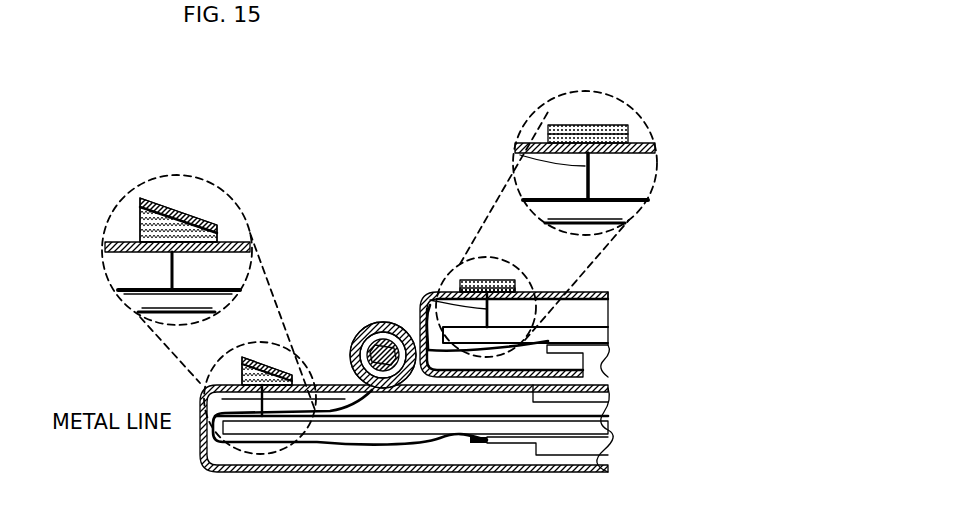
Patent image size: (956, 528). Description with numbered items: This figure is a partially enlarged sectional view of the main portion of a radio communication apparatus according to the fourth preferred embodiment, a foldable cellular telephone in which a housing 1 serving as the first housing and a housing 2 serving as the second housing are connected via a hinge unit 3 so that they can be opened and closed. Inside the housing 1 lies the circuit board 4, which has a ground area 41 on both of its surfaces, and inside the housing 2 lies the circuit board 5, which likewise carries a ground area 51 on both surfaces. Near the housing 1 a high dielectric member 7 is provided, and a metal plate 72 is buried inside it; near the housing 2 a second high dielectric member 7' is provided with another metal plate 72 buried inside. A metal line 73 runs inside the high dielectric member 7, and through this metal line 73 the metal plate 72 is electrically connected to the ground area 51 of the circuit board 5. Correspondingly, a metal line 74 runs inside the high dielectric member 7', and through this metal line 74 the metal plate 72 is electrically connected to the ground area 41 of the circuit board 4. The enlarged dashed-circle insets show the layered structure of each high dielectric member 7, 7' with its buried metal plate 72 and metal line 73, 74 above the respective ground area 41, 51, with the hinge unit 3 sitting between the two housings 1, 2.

The housing 1 is at (105, 247).
The housing 2 is at (655, 148).
The hinge unit 3 is at (375, 322).
The circuit board 4 is at (140, 300).
The ground area 41 is at (130, 288).
The circuit board 5 is at (630, 221).
The ground area 51 is at (642, 203).
The high dielectric member 7 is at (201, 269).
The high dielectric member 7' is at (510, 183).
The metal plate 72 is at (170, 220).
The metal line 73 is at (140, 222).
The metal line 74 is at (452, 292).